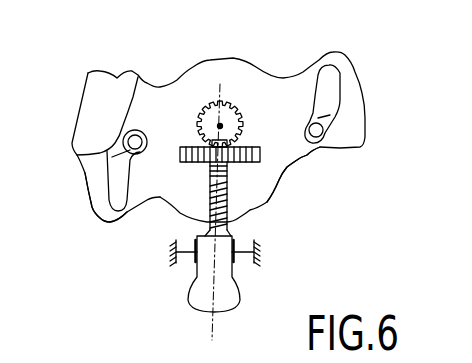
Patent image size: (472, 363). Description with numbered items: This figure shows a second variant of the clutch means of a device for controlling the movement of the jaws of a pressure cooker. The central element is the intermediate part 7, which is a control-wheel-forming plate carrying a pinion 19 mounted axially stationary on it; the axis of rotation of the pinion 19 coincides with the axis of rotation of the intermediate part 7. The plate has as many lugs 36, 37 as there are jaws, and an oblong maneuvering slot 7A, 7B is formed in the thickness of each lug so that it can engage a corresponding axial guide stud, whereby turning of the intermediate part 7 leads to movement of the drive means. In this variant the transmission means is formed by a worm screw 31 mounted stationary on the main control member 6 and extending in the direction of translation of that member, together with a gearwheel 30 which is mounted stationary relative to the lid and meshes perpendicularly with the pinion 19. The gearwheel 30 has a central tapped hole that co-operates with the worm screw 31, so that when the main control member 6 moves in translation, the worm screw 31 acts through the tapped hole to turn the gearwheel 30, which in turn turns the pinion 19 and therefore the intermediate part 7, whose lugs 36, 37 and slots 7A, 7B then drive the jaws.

The main control member 6 is at (203, 297).
The intermediate part 7 is at (208, 78).
The oblong maneuvering slot 7A is at (345, 97).
The oblong maneuvering slot 7B is at (108, 177).
The pinion 19 is at (238, 95).
The gearwheel 30 is at (148, 246).
The worm screw 31 is at (174, 214).
The lug 36 is at (92, 215).
The lug 37 is at (343, 160).